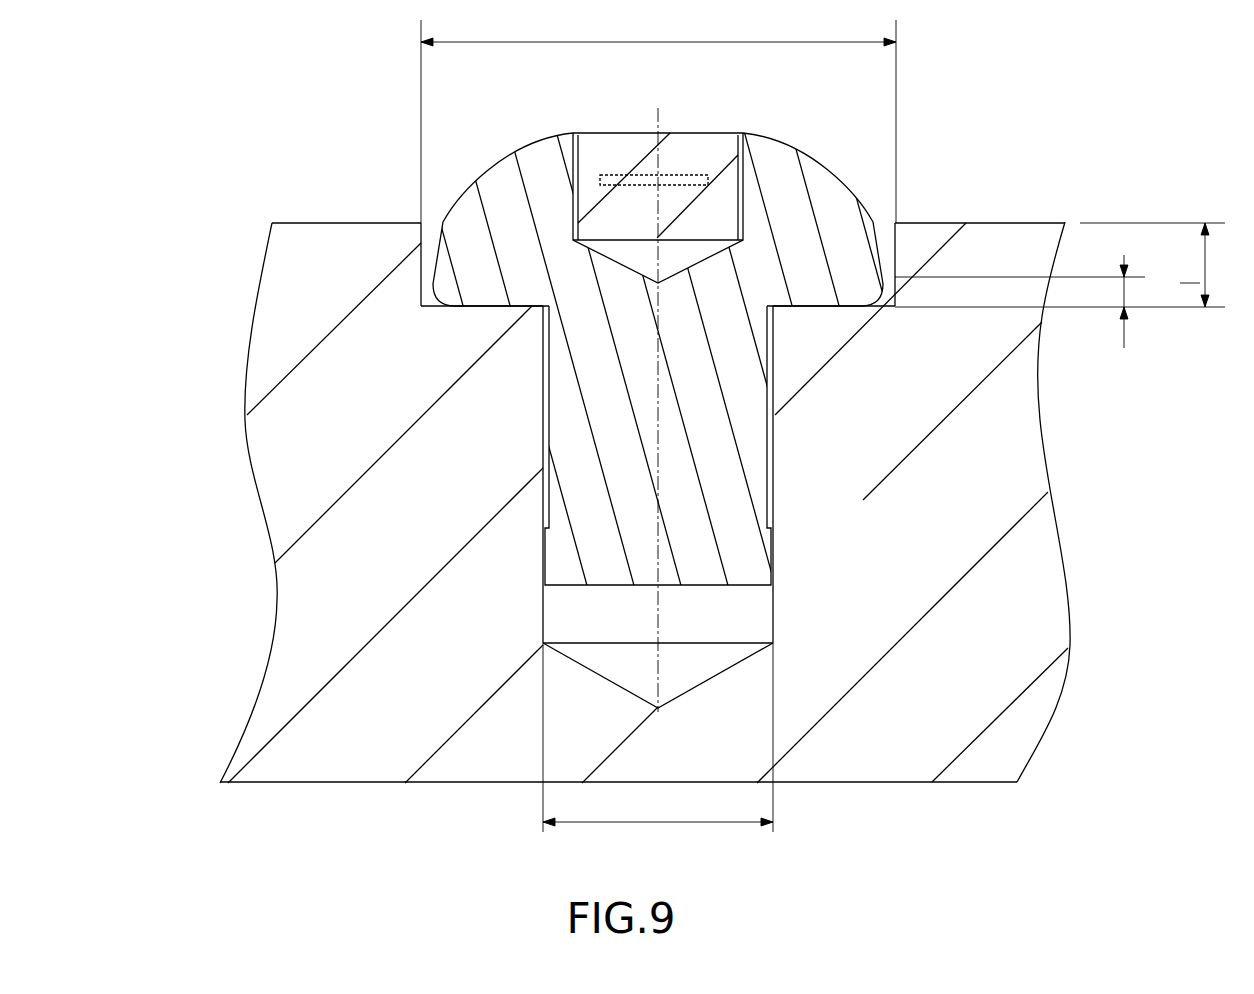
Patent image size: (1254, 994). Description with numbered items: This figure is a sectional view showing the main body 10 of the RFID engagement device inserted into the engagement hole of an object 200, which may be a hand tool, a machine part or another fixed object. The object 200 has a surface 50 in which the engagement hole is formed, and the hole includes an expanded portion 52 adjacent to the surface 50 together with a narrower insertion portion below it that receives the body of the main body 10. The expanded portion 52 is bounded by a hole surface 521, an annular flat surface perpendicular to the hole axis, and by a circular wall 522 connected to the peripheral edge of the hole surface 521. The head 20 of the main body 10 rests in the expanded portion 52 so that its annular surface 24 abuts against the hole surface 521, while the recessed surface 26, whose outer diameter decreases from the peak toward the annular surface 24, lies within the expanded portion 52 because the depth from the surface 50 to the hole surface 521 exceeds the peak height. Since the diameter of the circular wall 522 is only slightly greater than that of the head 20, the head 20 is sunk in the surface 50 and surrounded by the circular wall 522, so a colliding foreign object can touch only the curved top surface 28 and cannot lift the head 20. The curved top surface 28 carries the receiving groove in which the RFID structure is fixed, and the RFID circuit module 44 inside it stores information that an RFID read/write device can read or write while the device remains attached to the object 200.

The main body 10 is at (870, 161).
The head 20 is at (792, 141).
The curved top surface 28 is at (497, 158).
The RFID circuit module 44 is at (667, 173).
The surface 50 is at (1007, 222).
The expanded portion 52 is at (160, 305).
The hole surface 521 is at (484, 305).
The circular wall 522 is at (408, 242).
The annular surface 24 is at (820, 307).
The recessed surface 26 is at (897, 300).
The object 200 is at (905, 785).